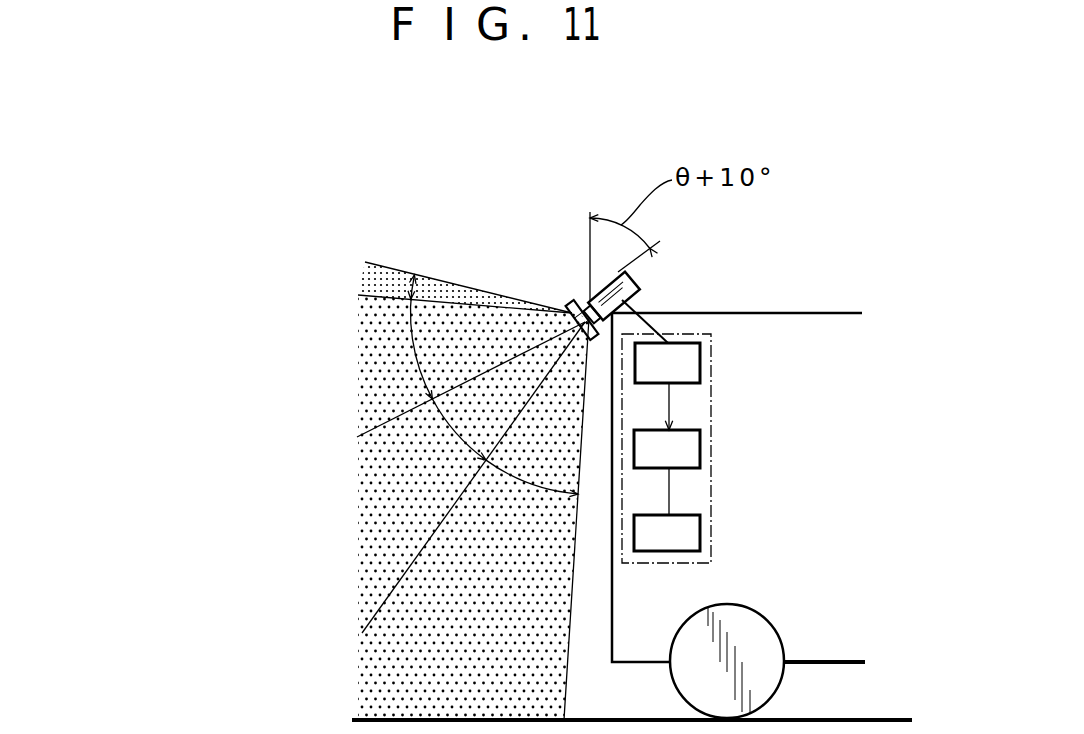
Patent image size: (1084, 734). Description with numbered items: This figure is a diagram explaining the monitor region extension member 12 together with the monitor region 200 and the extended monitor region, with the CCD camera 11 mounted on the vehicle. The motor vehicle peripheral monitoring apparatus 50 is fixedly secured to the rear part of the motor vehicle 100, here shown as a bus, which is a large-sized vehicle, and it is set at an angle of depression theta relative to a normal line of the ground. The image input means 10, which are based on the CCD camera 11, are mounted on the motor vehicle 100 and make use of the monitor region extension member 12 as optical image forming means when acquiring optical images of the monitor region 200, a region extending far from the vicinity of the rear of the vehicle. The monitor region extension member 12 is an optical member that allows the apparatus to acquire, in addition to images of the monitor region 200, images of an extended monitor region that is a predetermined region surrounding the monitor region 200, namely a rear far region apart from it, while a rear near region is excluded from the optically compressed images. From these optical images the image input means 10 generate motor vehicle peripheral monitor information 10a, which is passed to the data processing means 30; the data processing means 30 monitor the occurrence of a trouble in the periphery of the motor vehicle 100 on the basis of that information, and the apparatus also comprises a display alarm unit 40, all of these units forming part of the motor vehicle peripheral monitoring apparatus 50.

The image input means 10 is at (700, 364).
The motor vehicle peripheral monitor information 10a is at (669, 400).
The CCD camera 11 is at (640, 272).
The monitor region extension member 12 is at (570, 303).
The data processing means 30 is at (700, 450).
The display alarm unit 40 is at (700, 534).
The motor vehicle peripheral monitoring apparatus 50 is at (711, 497).
The motor vehicle 100 is at (795, 323).
The monitor region 200 is at (148, 450).